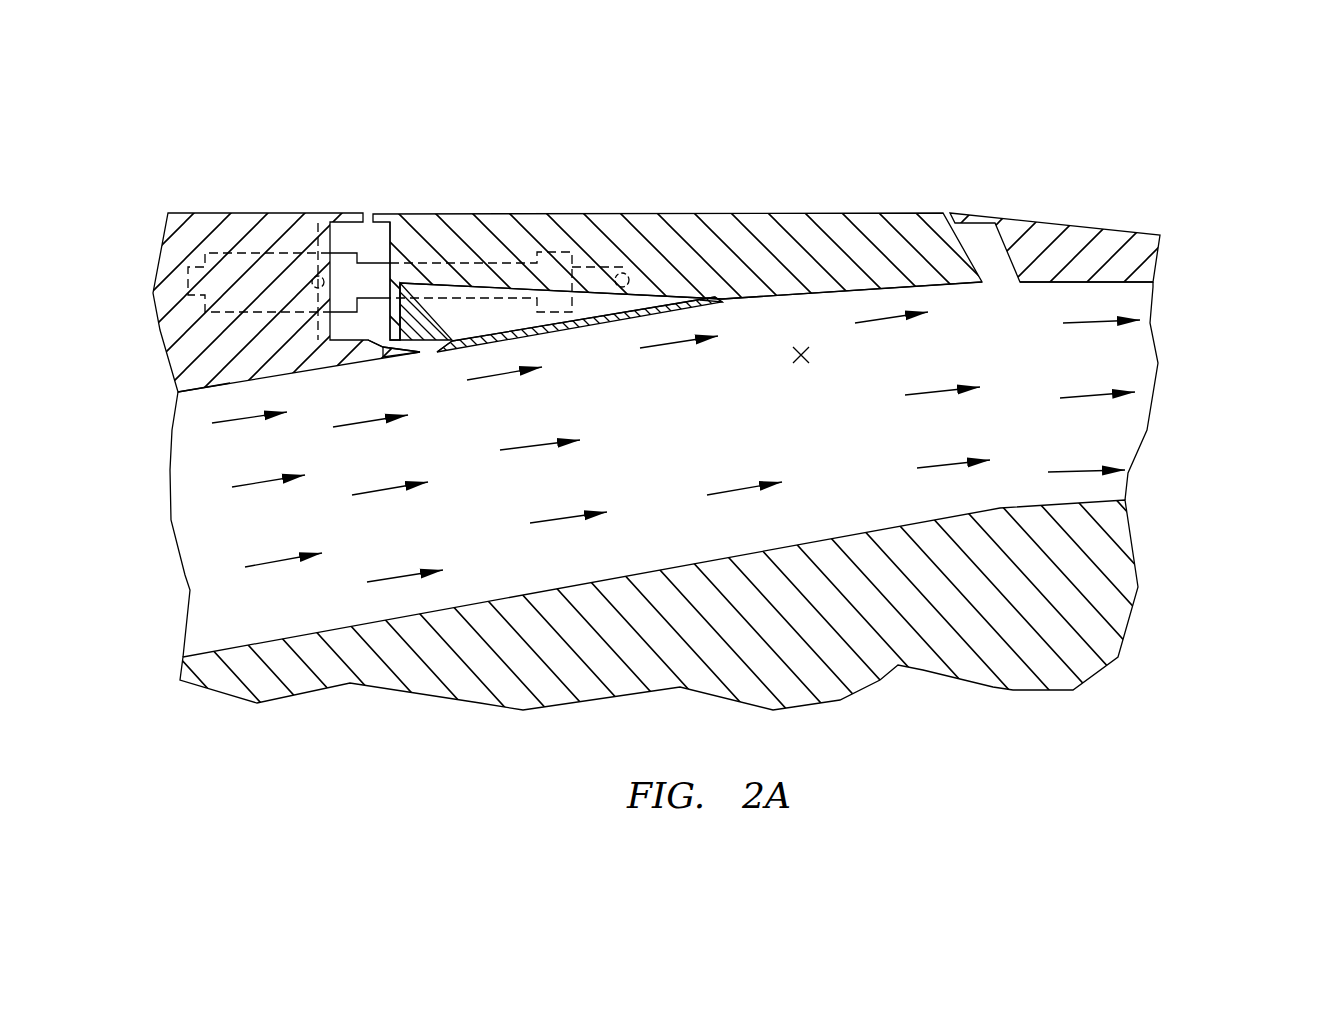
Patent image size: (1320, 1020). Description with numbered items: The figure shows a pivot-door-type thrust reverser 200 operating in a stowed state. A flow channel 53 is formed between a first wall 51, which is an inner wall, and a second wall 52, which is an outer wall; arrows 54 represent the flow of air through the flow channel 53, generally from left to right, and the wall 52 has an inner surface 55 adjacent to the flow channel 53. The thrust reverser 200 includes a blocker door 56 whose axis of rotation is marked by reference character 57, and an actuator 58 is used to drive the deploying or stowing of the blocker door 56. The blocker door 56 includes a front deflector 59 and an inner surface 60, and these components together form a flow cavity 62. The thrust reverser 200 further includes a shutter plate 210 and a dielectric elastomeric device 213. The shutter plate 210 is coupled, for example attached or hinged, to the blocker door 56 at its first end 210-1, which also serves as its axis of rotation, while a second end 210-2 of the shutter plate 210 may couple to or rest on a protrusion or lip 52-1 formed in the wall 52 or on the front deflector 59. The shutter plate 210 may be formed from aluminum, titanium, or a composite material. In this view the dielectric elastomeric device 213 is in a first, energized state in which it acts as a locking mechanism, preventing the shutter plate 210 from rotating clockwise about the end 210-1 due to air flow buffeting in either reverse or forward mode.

The thrust reverser 200 is at (1222, 133).
The first wall 51 is at (1117, 565).
The second wall 52 is at (192, 233).
The protrusion/lip 52-1 is at (405, 358).
The flow channel 53 is at (225, 596).
The flow of air 54 is at (243, 483).
The inner surface 55 is at (212, 370).
The blocker door 56 is at (627, 232).
The axis of rotation 57 is at (803, 365).
The actuator 58 is at (268, 272).
The front deflector 59 is at (417, 300).
The inner surface 60 is at (818, 292).
The flow cavity 62 is at (493, 308).
The shutter plate 210 is at (655, 305).
The first end of the shutter plate 210-1 is at (735, 305).
The second end of the shutter plate 210-2 is at (430, 352).
The dielectric elastomeric device 213 is at (415, 285).